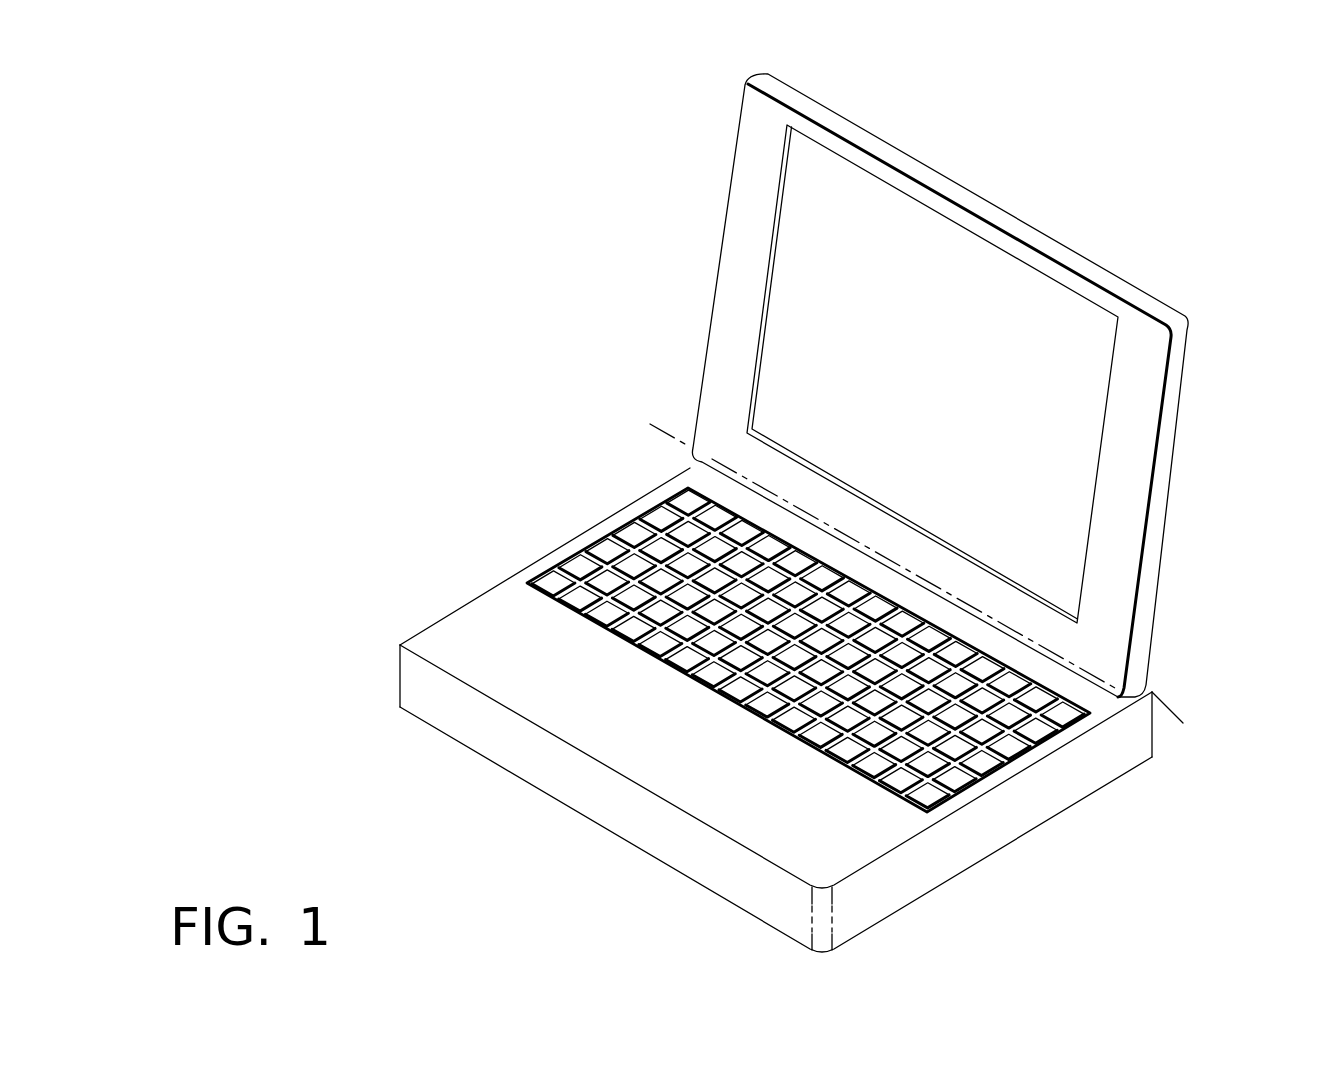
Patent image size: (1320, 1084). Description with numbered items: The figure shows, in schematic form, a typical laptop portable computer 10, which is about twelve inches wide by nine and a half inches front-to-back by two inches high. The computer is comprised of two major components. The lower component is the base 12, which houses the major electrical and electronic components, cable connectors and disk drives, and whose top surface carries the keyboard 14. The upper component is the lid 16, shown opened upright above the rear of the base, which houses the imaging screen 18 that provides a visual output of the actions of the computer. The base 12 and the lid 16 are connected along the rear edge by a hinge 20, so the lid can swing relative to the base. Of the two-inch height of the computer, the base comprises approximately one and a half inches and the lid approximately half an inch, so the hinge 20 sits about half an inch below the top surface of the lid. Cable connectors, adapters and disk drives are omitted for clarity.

The laptop portable computer 10 is at (385, 461).
The base 12 is at (937, 877).
The keyboard 14 is at (980, 764).
The lid 16 is at (1205, 400).
The imaging screen 18 is at (932, 357).
The hinge 20 is at (1163, 707).